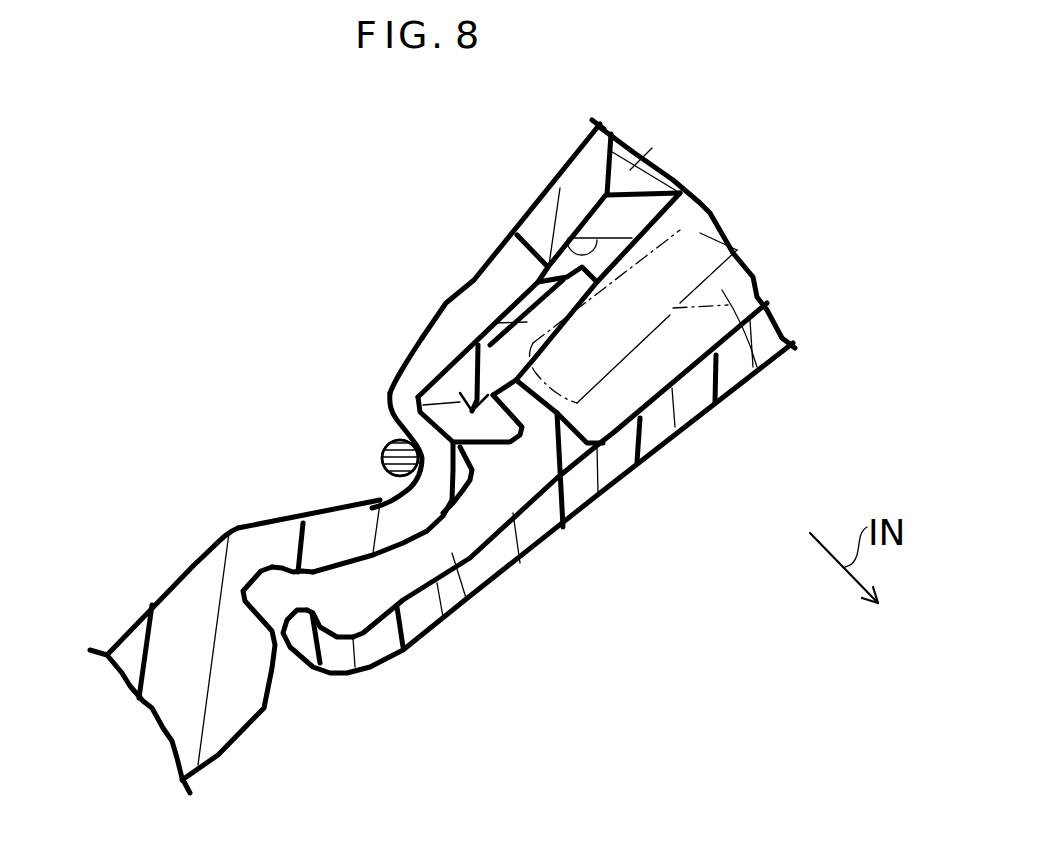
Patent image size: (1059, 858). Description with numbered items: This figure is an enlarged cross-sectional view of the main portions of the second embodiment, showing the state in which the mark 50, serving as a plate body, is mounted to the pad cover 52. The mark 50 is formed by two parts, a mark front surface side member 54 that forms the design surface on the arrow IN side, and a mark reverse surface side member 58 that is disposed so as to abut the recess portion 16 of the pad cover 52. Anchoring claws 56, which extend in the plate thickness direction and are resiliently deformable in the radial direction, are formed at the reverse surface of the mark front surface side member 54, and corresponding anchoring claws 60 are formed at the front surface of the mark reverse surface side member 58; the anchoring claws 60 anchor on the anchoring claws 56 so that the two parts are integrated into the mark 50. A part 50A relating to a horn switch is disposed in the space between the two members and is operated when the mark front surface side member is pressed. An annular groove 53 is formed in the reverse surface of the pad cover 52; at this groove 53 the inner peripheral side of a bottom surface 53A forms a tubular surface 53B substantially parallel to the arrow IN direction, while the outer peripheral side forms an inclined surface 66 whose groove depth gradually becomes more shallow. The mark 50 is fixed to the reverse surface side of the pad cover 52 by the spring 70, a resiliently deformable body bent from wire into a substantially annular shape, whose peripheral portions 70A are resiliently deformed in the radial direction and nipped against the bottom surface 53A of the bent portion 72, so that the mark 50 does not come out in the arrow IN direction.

The recess portion 16 is at (560, 245).
The mark 50 is at (782, 263).
The part relating to a horn switch 50A is at (760, 366).
The pad cover 52 is at (163, 577).
The annular groove 53 is at (347, 410).
The bottom surface 53A is at (395, 487).
The tubular surface 53B is at (393, 430).
The mark front surface side member 54 is at (703, 423).
The anchoring claws 56 is at (476, 352).
The mark reverse surface side member 58 is at (672, 221).
The anchoring claws 60 is at (505, 445).
The inclined surface 66 is at (273, 523).
The peripheral portions 70A is at (383, 450).
The spring 70 is at (400, 458).
The bent portion 72 is at (427, 505).